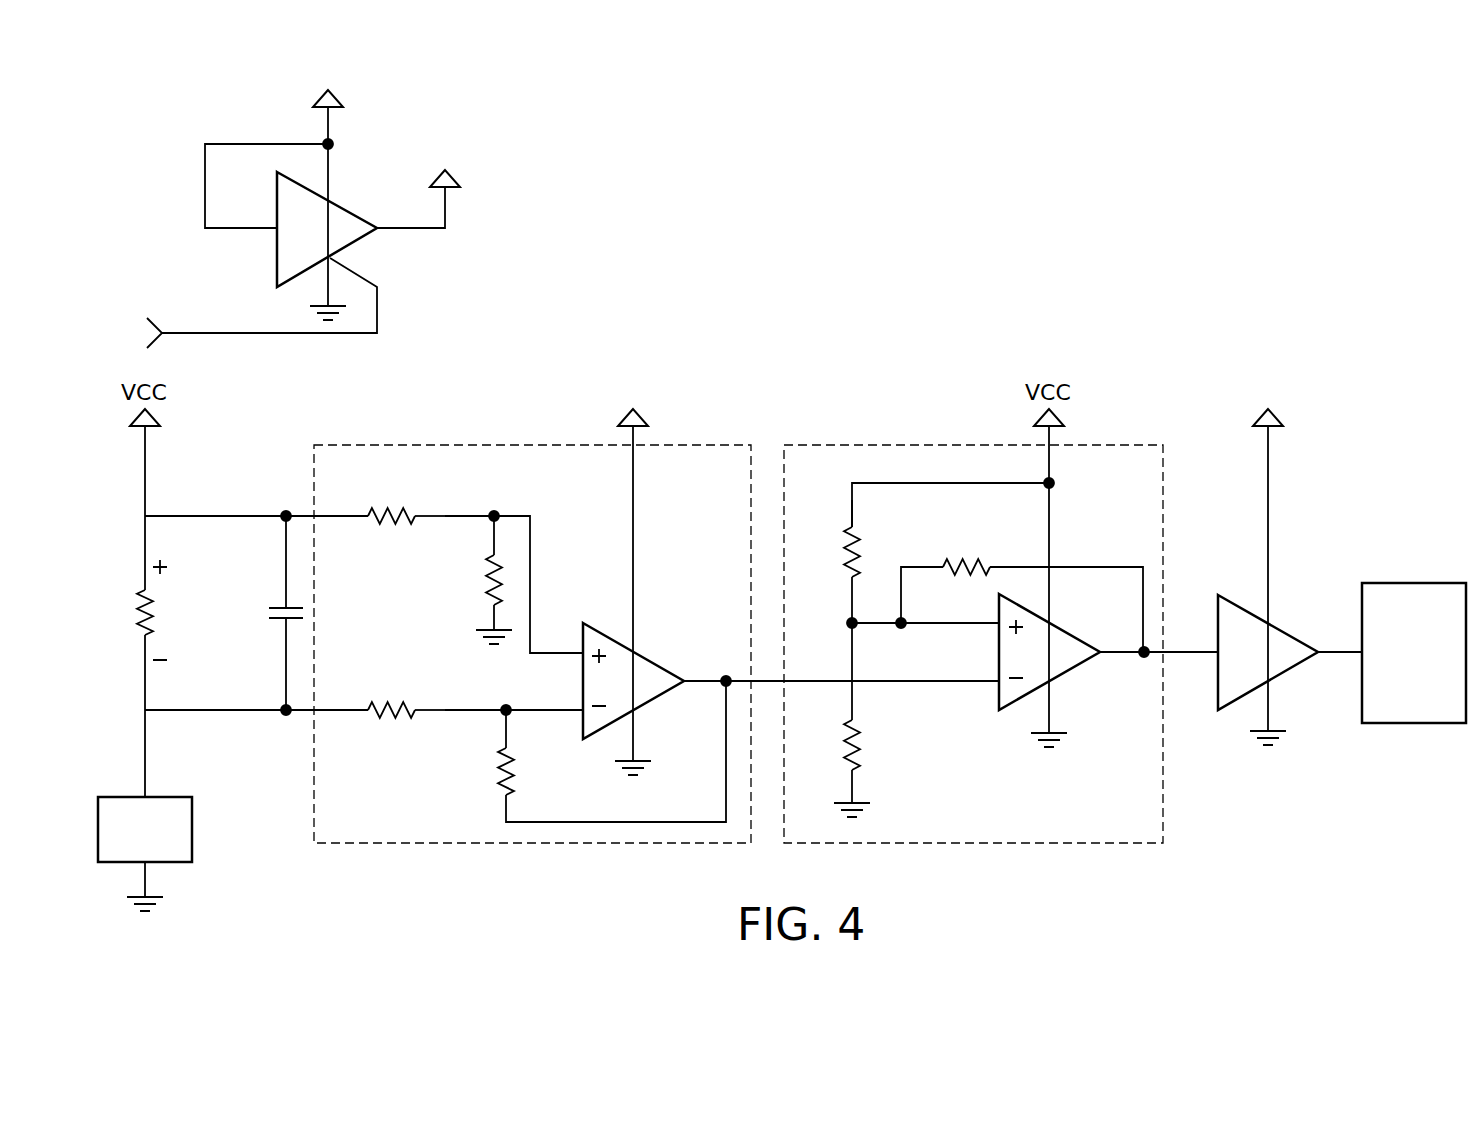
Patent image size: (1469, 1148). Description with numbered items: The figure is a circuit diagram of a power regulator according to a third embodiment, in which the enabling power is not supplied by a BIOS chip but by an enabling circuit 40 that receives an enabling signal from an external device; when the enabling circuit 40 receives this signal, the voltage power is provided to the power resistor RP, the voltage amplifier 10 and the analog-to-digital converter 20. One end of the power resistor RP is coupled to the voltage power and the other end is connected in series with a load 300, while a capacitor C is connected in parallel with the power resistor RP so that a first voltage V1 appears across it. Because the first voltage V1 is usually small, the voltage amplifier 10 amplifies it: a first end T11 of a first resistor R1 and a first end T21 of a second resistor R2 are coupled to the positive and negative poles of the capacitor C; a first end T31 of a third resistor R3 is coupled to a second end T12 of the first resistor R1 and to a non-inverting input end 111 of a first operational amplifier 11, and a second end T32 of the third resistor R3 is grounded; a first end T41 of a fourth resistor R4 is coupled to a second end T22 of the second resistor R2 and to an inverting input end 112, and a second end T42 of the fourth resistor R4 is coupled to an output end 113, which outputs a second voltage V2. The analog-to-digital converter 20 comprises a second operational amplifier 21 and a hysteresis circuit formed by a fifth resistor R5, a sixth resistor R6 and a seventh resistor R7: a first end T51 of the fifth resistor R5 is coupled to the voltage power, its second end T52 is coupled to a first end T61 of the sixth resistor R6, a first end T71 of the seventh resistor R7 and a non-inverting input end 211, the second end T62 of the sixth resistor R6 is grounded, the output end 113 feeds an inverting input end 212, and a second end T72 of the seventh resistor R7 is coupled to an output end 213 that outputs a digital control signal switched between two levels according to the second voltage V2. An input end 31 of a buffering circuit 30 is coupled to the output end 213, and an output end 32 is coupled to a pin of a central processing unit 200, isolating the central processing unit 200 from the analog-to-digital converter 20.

The enabling circuit 40 is at (347, 207).
The voltage amplifier 10 is at (478, 445).
The analog-to-digital converter 20 is at (914, 445).
The buffering circuit 30 is at (1290, 633).
The central processing unit 200 is at (1418, 583).
The load 300 is at (192, 828).
The first operational amplifier 11 is at (652, 702).
The non-inverting input end 111 is at (585, 654).
The inverting input end 112 is at (583, 716).
The output end 113 is at (685, 678).
The second operational amplifier 21 is at (1070, 673).
The non-inverting input end 211 is at (998, 627).
The inverting input end 212 is at (998, 683).
The output end 213 is at (1100, 648).
The input end 31 is at (1215, 658).
The output end 32 is at (1320, 655).
The first resistor R1 is at (391, 503).
The second resistor R2 is at (391, 695).
The third resistor R3 is at (477, 580).
The fourth resistor R4 is at (489, 771).
The fifth resistor R5 is at (834, 552).
The sixth resistor R6 is at (834, 745).
The seventh resistor R7 is at (966, 554).
The power resistor RP is at (126, 612).
The capacitor C is at (275, 613).
The first voltage V1 is at (172, 610).
The second voltage V2 is at (853, 669).
The first end T11 is at (357, 513).
The second end T12 is at (428, 513).
The first end T21 is at (357, 707).
The second end T22 is at (428, 707).
The first end T31 is at (493, 545).
The second end T32 is at (493, 613).
The first end T41 is at (504, 740).
The second end T42 is at (504, 806).
The first end T51 is at (850, 520).
The second end T52 is at (849, 583).
The first end T61 is at (852, 708).
The second end T62 is at (852, 781).
The first end T71 is at (934, 565).
The second end T72 is at (1003, 565).